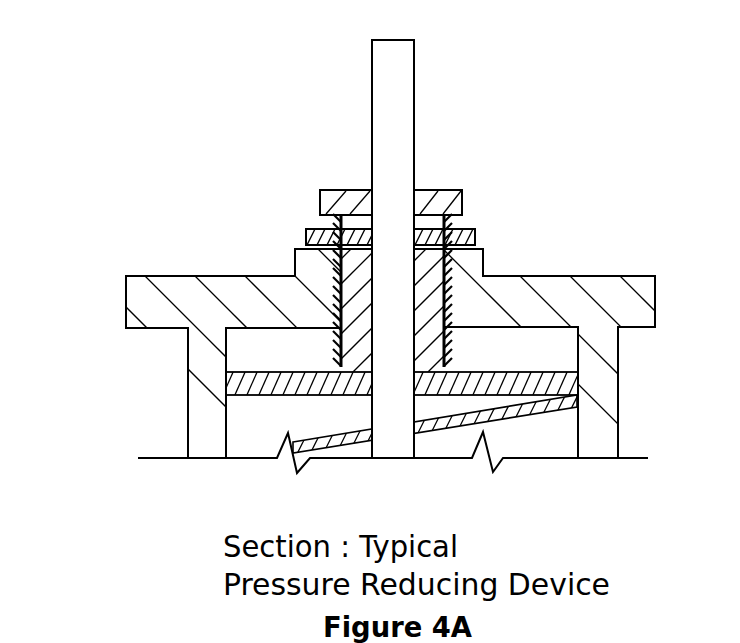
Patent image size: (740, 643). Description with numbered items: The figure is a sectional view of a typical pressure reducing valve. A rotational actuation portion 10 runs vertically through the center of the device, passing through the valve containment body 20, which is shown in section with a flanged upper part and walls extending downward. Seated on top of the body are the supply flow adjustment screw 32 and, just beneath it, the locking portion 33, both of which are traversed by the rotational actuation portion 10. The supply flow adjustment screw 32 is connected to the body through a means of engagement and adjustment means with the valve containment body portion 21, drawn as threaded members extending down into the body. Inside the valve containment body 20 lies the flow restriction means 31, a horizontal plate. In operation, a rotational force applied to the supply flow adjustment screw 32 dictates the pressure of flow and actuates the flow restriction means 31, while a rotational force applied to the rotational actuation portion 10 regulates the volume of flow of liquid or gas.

The rotational actuation portion 10 is at (393, 77).
The valve containment body 20 is at (165, 304).
The means of engagement and adjustment means with the valve containment body portion 21 is at (445, 270).
The flow restriction means 31 is at (238, 388).
The supply flow adjustment screw 32 is at (355, 212).
The locking portion 33 is at (320, 237).